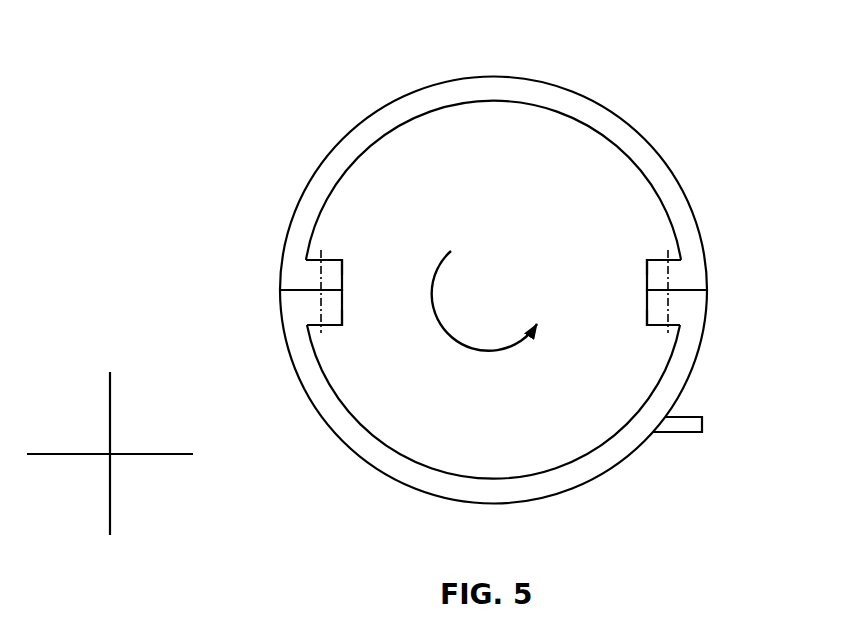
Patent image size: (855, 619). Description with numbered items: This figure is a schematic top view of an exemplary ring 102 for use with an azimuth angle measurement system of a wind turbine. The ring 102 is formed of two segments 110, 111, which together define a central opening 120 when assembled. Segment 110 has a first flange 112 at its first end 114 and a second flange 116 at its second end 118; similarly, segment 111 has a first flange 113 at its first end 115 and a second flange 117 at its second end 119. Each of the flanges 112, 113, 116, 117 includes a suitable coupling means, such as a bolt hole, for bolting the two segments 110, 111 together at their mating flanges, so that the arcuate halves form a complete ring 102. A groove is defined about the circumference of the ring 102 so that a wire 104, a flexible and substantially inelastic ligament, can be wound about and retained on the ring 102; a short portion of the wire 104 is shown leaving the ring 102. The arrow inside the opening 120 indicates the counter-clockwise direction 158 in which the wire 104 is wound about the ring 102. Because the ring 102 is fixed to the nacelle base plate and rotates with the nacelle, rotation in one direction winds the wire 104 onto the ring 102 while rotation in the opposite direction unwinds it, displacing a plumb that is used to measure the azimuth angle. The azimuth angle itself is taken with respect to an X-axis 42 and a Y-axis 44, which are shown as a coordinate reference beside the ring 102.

The ring 102 is at (309, 80).
The segment 110 is at (503, 82).
The segment 111 is at (615, 462).
The first flange 112 is at (333, 258).
The second flange 117 is at (333, 326).
The first end 114 is at (273, 255).
The second end 119 is at (273, 318).
The second flange 116 is at (657, 260).
The first flange 113 is at (657, 326).
The second end 118 is at (713, 258).
The first end 115 is at (713, 318).
The wire 104 is at (688, 432).
The opening 120 is at (508, 247).
The counter-clockwise direction 158 is at (491, 352).
The X-axis 42 is at (156, 456).
The Y-axis 44 is at (108, 490).